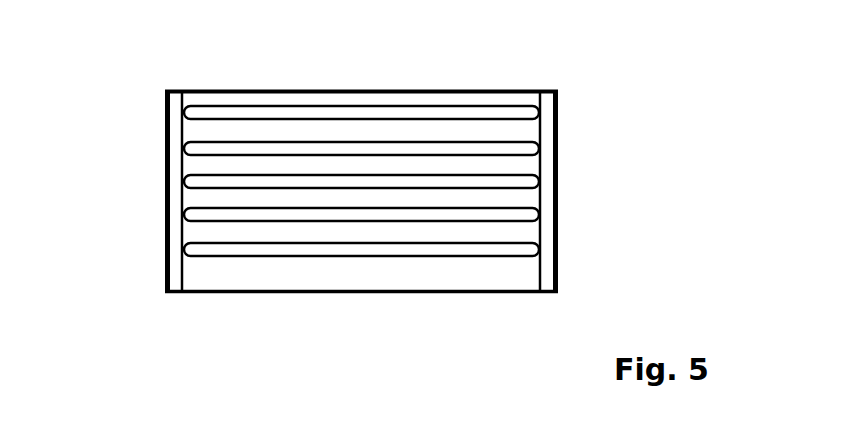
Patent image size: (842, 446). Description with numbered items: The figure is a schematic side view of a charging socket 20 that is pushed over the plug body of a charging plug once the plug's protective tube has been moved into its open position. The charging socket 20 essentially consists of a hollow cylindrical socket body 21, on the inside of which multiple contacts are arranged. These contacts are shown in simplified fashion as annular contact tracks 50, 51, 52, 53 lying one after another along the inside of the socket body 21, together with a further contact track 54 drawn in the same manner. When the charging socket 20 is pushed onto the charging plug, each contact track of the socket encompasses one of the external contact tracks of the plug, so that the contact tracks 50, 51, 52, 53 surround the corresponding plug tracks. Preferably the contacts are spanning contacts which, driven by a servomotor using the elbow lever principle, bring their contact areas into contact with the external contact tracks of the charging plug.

The charging socket 20 is at (608, 89).
The socket body 21 is at (165, 118).
The annular contact track 50 is at (262, 107).
The annular contact track 51 is at (450, 149).
The annular contact track 52 is at (482, 183).
The annular contact track 53 is at (345, 217).
The fifth cooling bar 54 is at (258, 250).